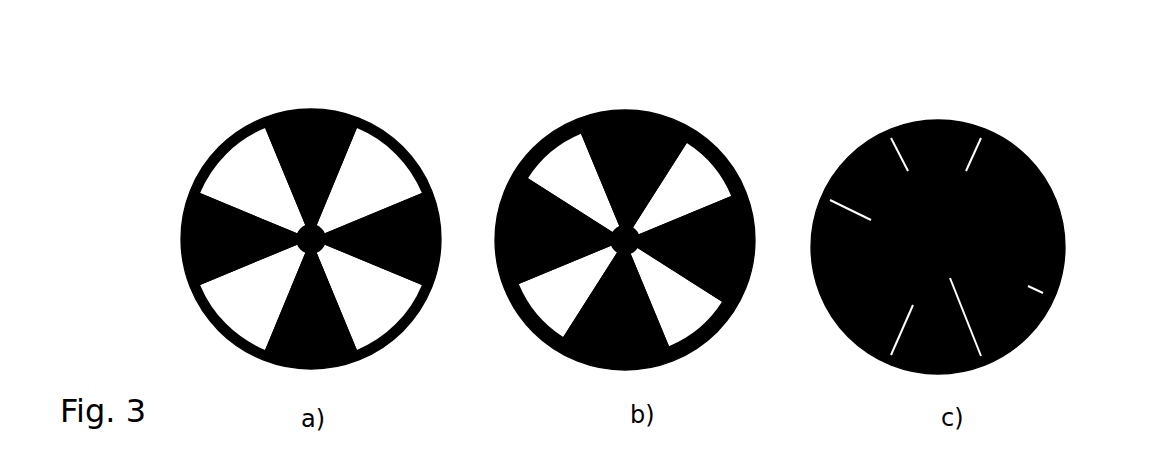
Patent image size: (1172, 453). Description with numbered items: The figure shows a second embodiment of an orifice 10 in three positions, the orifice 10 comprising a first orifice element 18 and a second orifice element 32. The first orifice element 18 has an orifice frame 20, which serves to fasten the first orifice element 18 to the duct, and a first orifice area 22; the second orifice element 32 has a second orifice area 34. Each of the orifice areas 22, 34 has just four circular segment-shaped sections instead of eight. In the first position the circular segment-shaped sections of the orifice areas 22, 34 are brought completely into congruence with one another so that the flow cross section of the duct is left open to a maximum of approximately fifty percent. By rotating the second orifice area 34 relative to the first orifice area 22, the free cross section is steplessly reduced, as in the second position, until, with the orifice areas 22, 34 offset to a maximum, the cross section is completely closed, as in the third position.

The orifice 10 is at (361, 91).
The first orifice element 18 is at (412, 156).
The orifice frame 20 is at (202, 148).
The first orifice area 22 is at (535, 273).
The second orifice element 32 is at (388, 270).
The second orifice area 34 is at (326, 176).